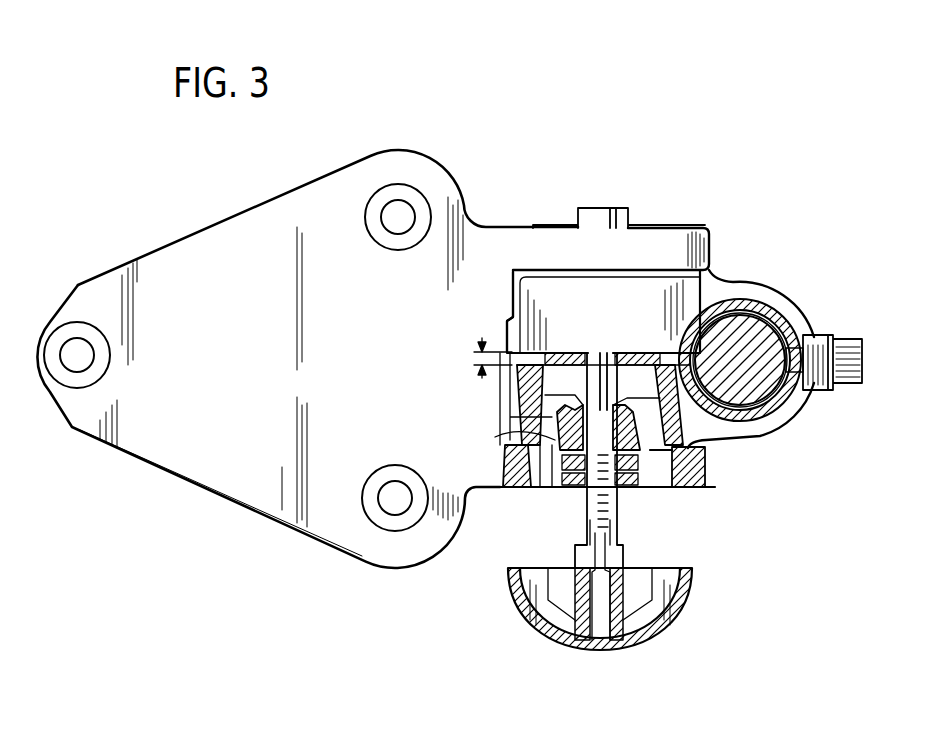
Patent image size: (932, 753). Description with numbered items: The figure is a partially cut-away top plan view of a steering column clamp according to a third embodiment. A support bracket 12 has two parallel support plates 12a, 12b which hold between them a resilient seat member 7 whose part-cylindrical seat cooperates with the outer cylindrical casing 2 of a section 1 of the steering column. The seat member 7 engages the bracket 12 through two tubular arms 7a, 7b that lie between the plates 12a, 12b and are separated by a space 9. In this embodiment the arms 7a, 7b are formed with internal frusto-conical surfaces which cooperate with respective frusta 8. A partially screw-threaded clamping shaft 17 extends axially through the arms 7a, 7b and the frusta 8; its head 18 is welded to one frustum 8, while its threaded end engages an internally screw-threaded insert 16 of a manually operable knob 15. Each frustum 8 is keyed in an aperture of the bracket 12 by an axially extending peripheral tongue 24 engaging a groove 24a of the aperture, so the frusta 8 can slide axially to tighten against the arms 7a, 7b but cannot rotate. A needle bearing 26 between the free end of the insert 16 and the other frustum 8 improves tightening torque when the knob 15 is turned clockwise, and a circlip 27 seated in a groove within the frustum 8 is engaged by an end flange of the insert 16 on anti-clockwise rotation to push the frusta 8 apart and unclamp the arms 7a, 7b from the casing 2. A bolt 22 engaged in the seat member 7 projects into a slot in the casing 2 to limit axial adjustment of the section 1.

The section of the steering column 1 is at (807, 392).
The casing 2 is at (780, 320).
The seat member 7 is at (775, 286).
The arm 7a is at (515, 333).
The arm 7b is at (512, 390).
The frustum 8 is at (548, 428).
The space 9 is at (510, 362).
The support bracket 12 is at (385, 148).
The support plate 12a is at (710, 470).
The support plate 12b is at (710, 242).
The knob 15 is at (690, 572).
The insert 16 is at (587, 520).
The clamping shaft 17 is at (625, 528).
The head 18 is at (603, 208).
The bolt 22 is at (848, 337).
The tongue 24 is at (542, 490).
The groove 24a is at (513, 458).
The needle bearing 26 is at (695, 488).
The circlip 27 is at (630, 490).